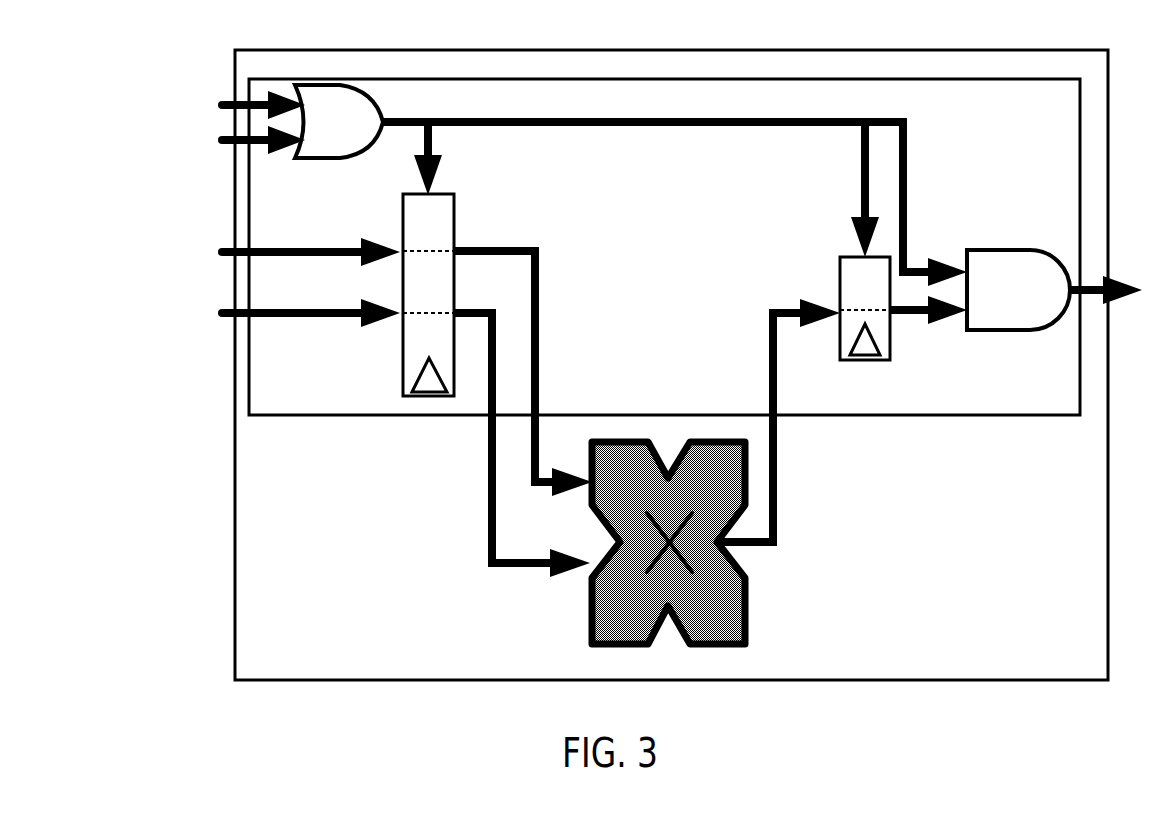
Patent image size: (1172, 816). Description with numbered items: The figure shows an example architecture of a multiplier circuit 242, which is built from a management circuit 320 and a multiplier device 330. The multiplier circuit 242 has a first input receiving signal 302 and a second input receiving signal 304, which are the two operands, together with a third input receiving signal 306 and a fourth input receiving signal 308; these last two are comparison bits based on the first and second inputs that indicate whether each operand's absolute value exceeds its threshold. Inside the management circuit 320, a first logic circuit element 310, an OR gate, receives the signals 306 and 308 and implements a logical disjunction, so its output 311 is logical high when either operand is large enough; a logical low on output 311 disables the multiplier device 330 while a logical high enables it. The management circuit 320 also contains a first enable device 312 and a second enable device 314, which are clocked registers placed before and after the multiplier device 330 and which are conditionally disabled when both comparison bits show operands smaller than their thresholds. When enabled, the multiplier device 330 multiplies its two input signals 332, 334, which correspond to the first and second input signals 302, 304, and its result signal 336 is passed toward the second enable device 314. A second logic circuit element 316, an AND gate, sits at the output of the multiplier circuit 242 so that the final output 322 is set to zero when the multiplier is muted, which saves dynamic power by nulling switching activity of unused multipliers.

The multiplier circuit 242 is at (671, 365).
The first input signal 302 is at (180, 250).
The second input signal 304 is at (180, 312).
The third input signal 306 is at (172, 85).
The fourth input signal 308 is at (145, 160).
The first logic circuit element 310 is at (343, 95).
The output 311 is at (410, 115).
The first enable device 312 is at (400, 215).
The second enable device 314 is at (838, 275).
The second logic circuit element 316 is at (1027, 262).
The management circuit 320 is at (664, 247).
The product output 322 is at (1140, 290).
The multiplier device 330 is at (610, 625).
The first multiplier input signal 332 is at (562, 470).
The second multiplier input signal 334 is at (530, 570).
The multiplier output signal 336 is at (778, 530).